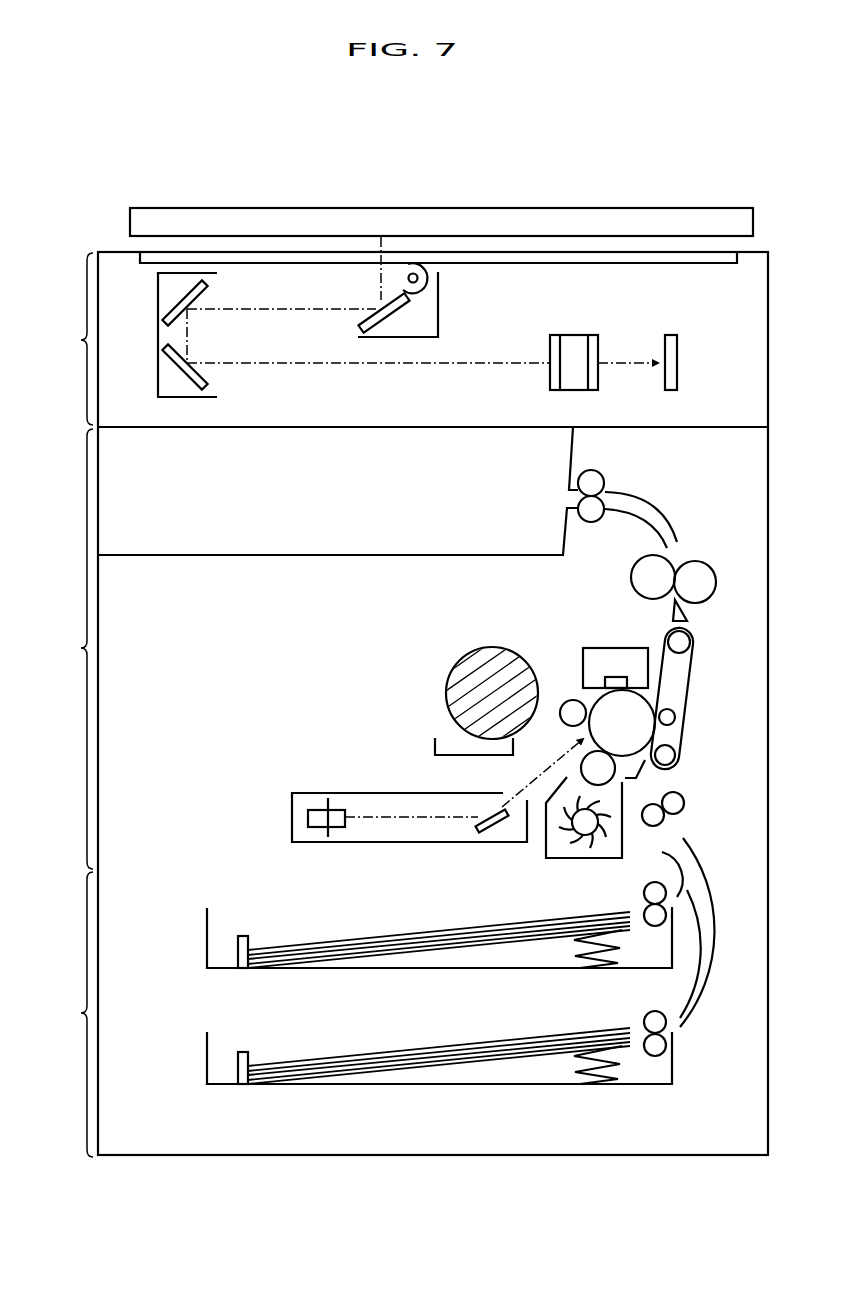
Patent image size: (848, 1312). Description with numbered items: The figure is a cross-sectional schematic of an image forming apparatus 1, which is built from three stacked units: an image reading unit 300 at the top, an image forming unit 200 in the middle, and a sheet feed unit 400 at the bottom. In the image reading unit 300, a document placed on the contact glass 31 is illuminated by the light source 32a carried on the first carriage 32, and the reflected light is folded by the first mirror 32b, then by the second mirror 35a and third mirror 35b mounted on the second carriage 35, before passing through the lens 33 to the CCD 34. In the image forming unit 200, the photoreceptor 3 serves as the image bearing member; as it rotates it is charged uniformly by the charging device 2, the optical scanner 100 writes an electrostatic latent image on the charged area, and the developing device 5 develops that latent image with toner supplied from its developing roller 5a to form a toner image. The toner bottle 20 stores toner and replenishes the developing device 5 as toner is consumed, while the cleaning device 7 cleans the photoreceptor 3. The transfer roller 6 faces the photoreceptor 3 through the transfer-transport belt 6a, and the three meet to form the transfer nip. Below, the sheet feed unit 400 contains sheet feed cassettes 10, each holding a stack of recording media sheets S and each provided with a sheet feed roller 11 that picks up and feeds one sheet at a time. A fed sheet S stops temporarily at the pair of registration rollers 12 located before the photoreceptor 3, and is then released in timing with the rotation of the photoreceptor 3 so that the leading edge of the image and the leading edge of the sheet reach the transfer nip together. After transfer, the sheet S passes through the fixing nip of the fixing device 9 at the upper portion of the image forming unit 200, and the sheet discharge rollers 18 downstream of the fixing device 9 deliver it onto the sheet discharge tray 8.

The image forming apparatus 1 is at (649, 176).
The contact glass 31 is at (511, 251).
The image reading unit 300 is at (67, 339).
The image forming unit 200 is at (67, 649).
The sheet feed unit 400 is at (67, 1014).
The second carriage 35 is at (190, 337).
The second mirror 35a is at (204, 291).
The third mirror 35b is at (206, 385).
The first carriage 32 is at (424, 308).
The light source 32a is at (428, 287).
The first mirror 32b is at (404, 318).
The lens 33 is at (576, 335).
The CCD 34 is at (672, 335).
The sheet discharge tray 8 is at (296, 548).
The sheet discharge rollers 18 is at (598, 475).
The fixing device 9 is at (691, 545).
The cleaning device 7 is at (609, 643).
The toner bottle 20 is at (447, 690).
The photoreceptor 3 is at (616, 734).
The charging device 2 is at (568, 701).
The transfer roller 6 is at (689, 698).
The transfer-transport belt 6a is at (686, 678).
The developing roller 5a is at (607, 783).
The registration rollers 12 is at (685, 803).
The developing device 5 is at (565, 869).
The optical scanner 100 is at (292, 820).
The sheet feed roller 11 is at (652, 882).
The sheet feed cassettes 10 is at (407, 994).
The recording media sheets S is at (361, 938).